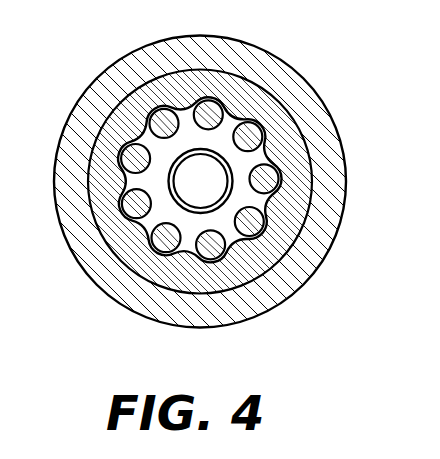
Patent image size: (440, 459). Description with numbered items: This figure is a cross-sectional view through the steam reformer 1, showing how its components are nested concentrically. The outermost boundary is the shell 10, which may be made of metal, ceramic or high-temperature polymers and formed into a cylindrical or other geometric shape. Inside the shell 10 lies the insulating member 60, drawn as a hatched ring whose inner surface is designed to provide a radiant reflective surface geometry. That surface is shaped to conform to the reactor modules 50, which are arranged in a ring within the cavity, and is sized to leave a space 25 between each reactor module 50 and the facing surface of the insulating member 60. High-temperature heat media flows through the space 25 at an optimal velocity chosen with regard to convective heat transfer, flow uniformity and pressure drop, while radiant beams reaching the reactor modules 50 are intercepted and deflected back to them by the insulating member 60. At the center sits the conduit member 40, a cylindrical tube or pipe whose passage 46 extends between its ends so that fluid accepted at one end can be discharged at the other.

The steam reformer 1 is at (228, 172).
The shell 10 is at (322, 268).
The space 25 is at (259, 134).
The conduit member 40 is at (169, 185).
The passage 46 is at (201, 181).
The reactor module 50 is at (282, 175).
The insulating member 60 is at (305, 208).